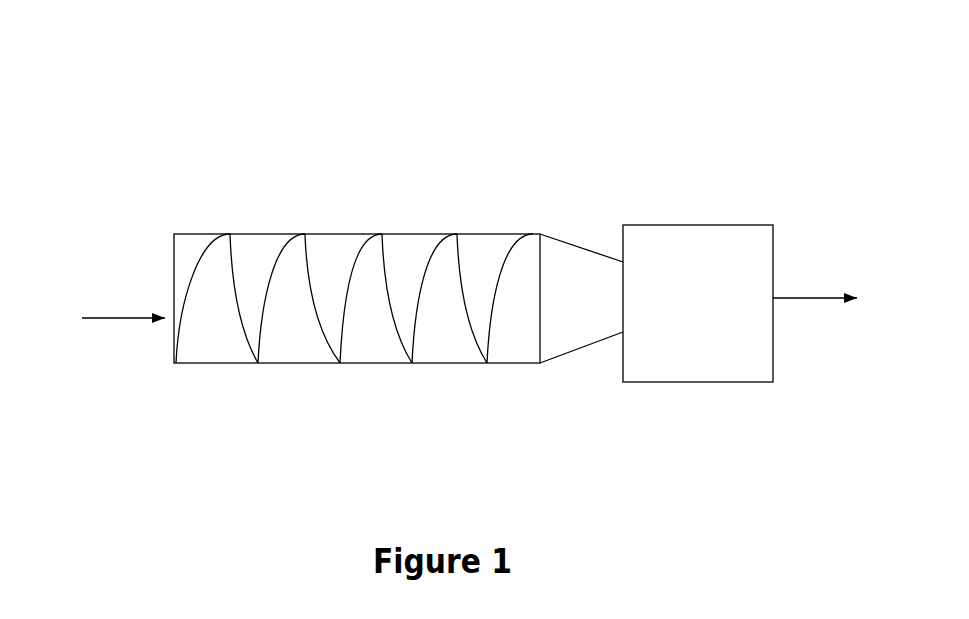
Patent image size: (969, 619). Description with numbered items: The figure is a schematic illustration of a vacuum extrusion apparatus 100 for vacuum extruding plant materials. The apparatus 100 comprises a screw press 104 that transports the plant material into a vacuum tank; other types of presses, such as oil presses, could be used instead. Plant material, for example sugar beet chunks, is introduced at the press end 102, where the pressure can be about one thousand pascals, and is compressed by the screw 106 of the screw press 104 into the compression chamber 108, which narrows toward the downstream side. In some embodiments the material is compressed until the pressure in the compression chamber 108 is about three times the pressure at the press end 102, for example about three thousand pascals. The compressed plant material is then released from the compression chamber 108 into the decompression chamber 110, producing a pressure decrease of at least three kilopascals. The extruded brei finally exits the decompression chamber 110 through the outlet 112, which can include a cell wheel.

The vacuum extrusion apparatus 100 is at (399, 195).
The press end 102 is at (98, 326).
The screw press 104 is at (342, 232).
The screw 106 is at (325, 337).
The compression chamber 108 is at (568, 278).
The decompression chamber 110 is at (708, 252).
The outlet 112 is at (836, 298).